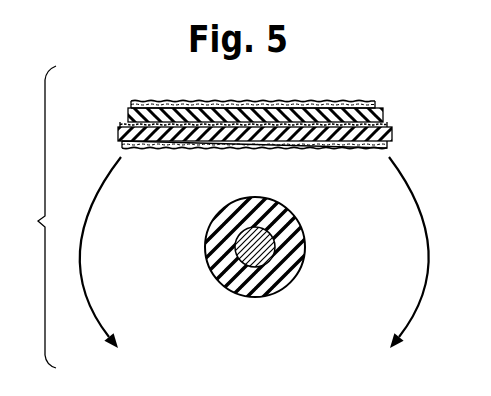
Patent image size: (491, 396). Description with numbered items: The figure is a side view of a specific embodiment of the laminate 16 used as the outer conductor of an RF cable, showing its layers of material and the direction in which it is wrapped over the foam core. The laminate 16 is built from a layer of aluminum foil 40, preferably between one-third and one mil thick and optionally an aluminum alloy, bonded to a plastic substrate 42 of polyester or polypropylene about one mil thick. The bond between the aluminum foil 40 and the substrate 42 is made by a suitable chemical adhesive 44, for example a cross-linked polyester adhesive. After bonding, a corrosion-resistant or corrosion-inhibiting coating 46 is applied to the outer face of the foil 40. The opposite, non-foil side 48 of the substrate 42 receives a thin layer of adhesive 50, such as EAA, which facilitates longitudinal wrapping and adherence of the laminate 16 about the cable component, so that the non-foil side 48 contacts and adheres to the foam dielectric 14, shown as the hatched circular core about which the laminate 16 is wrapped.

The foam dielectric 14 is at (299, 239).
The laminate 16 is at (185, 80).
The aluminum foil layer 40 is at (256, 139).
The plastic substrate 42 is at (394, 131).
The chemical adhesive 44 is at (386, 119).
The corrosion-inhibiting coating 46 is at (131, 101).
The non-foil side 48 is at (184, 172).
The adhesive layer 50 is at (325, 148).